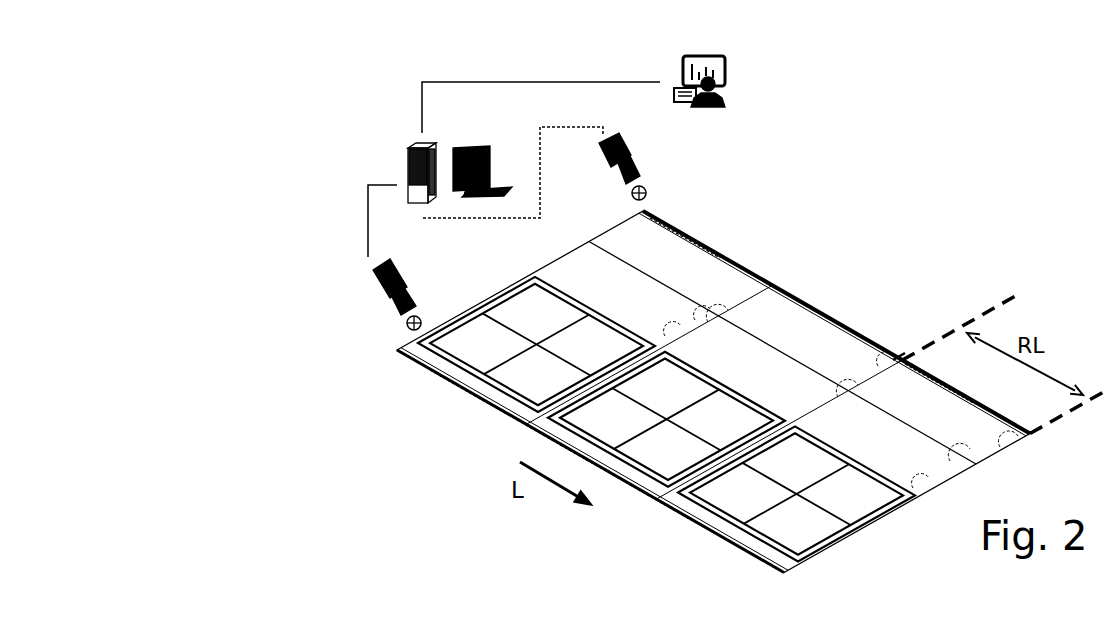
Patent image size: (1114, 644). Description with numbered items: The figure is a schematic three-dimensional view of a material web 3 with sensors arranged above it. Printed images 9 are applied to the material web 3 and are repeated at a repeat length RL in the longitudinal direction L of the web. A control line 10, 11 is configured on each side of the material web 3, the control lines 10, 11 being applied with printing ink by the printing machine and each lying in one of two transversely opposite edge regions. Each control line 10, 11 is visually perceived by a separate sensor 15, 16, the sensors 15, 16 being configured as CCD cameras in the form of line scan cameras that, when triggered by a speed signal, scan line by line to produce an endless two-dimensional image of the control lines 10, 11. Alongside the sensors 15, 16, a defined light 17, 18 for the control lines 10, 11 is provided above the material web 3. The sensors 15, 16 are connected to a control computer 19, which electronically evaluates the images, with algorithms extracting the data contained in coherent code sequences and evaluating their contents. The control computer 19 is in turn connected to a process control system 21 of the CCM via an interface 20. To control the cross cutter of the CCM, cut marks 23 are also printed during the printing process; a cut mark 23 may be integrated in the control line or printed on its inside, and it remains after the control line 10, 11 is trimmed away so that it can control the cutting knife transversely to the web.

The material web 3 is at (899, 264).
The printed images 9 is at (677, 403).
The control line 10 is at (836, 304).
The control line 11 is at (440, 386).
The sensor 15 is at (632, 155).
The sensor 16 is at (380, 288).
The defined light 17 is at (646, 195).
The defined light 18 is at (409, 328).
The control computer 19 is at (394, 151).
The interface 20 is at (527, 82).
The process control system 21 is at (744, 61).
The cut mark 23 is at (902, 340).